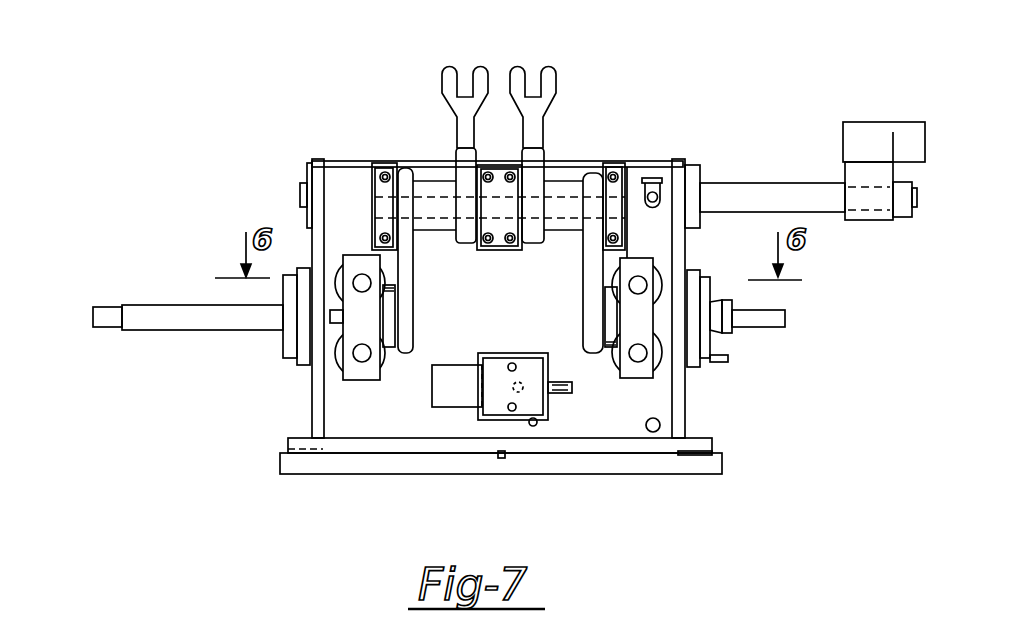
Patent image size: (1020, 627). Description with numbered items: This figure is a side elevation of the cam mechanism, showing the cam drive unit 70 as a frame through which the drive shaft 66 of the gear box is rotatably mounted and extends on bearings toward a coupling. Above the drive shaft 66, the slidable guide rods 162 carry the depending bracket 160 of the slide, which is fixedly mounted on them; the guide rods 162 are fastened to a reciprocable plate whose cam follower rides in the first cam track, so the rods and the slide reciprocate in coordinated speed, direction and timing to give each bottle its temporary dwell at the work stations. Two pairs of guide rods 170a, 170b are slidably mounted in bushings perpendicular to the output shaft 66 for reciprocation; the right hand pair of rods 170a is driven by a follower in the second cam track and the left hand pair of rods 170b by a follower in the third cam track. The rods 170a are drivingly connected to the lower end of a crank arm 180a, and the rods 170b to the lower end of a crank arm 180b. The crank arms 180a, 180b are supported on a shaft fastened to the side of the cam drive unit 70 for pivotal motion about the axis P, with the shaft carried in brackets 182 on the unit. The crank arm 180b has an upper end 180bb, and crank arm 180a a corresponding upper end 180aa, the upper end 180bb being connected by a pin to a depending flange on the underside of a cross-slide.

The cam drive unit 70 is at (300, 412).
The drive shaft 66 is at (147, 318).
The guide rods 162 is at (726, 198).
The depending bracket 160 is at (845, 165).
The pillow block bearings 182 is at (493, 167).
The axis P is at (557, 203).
The upper end 180bb is at (450, 77).
The fork lever arm 180aa is at (547, 76).
The crank arm 180b is at (398, 292).
The crank arm 180a is at (596, 302).
The guide rods 170b is at (361, 282).
The guide rods 170a is at (640, 285).